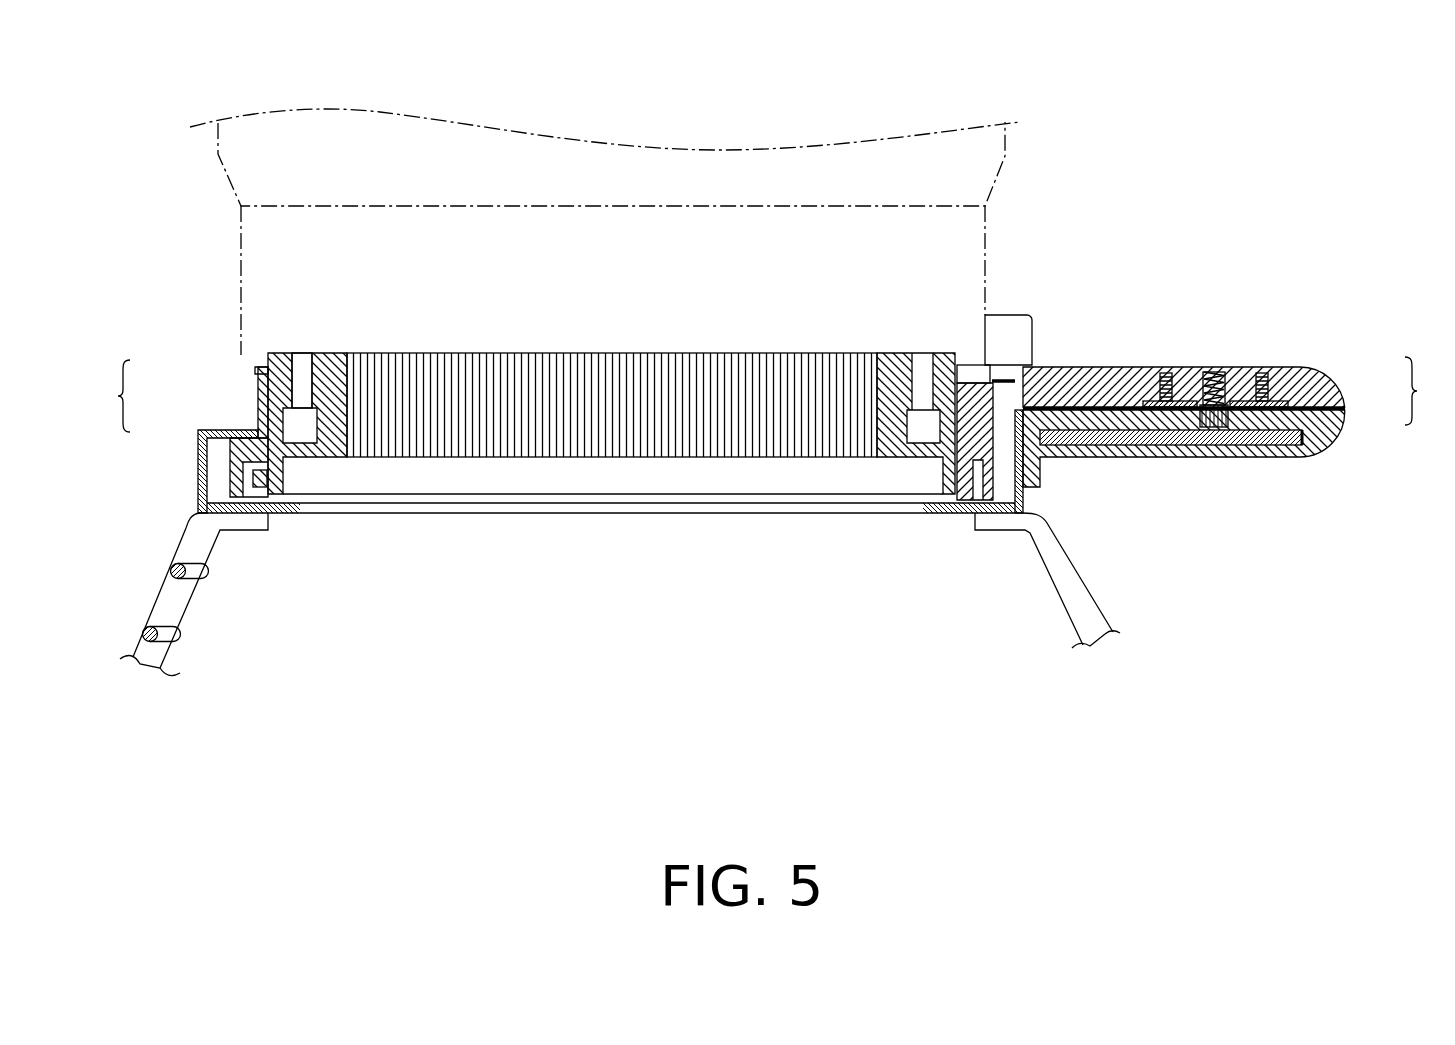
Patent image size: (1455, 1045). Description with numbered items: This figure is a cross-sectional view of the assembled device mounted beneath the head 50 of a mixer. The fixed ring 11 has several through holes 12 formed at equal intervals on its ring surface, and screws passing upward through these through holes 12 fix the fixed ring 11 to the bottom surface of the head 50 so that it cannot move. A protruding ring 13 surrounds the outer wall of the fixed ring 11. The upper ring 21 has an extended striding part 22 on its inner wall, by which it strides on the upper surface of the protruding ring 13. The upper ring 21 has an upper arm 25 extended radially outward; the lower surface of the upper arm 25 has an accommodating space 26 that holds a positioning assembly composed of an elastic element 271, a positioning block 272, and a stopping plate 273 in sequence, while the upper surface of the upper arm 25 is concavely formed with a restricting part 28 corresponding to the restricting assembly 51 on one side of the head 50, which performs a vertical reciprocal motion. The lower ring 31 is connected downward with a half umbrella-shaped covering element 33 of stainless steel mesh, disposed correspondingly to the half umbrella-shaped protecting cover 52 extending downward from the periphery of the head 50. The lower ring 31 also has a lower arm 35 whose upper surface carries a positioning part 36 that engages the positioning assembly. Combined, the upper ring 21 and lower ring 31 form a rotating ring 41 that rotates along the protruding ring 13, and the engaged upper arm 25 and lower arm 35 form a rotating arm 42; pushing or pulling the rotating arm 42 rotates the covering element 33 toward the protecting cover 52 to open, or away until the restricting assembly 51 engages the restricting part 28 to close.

The fixed ring 11 is at (268, 372).
The through holes 12 is at (298, 353).
The protruding ring 13 is at (270, 488).
The upper ring 21 is at (258, 400).
The striding part 22 is at (282, 478).
The upper arm 25 is at (1338, 390).
The accommodating space 26 is at (1195, 400).
The restricting part 28 is at (977, 375).
The lower ring 31 is at (200, 437).
The covering element 33 is at (170, 597).
The lower arm 35 is at (1340, 417).
The positioning part 36 is at (1230, 402).
The rotating ring 41 is at (109, 396).
The rotating arm 42 is at (1425, 391).
The head 50 is at (240, 266).
The restricting assembly 51 is at (1022, 315).
The protecting cover 52 is at (1070, 587).
The elastic element 271 is at (1213, 372).
The positioning block 272 is at (1210, 433).
The stopping plate 273 is at (1180, 370).